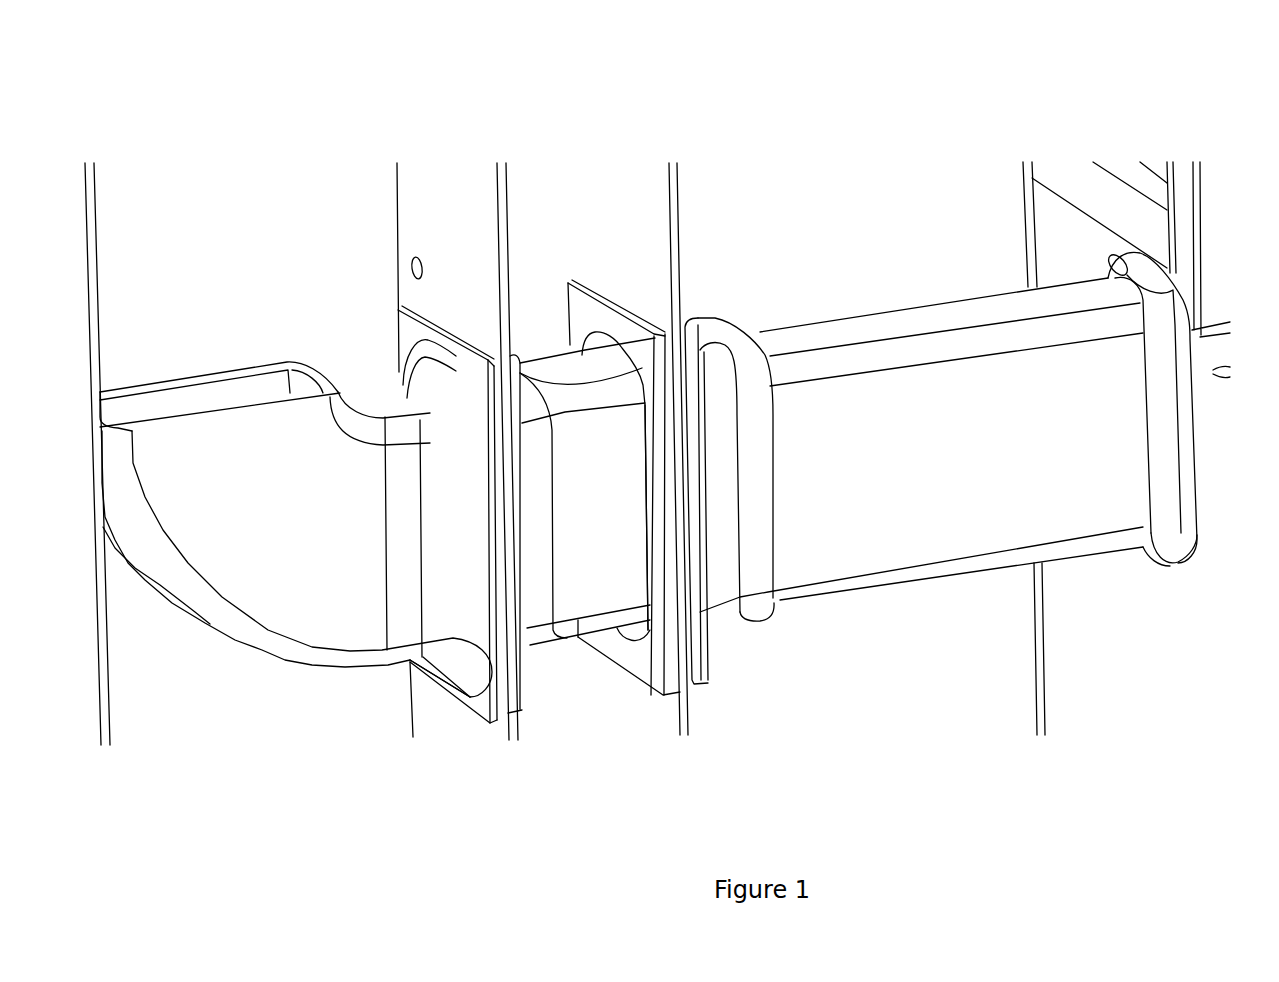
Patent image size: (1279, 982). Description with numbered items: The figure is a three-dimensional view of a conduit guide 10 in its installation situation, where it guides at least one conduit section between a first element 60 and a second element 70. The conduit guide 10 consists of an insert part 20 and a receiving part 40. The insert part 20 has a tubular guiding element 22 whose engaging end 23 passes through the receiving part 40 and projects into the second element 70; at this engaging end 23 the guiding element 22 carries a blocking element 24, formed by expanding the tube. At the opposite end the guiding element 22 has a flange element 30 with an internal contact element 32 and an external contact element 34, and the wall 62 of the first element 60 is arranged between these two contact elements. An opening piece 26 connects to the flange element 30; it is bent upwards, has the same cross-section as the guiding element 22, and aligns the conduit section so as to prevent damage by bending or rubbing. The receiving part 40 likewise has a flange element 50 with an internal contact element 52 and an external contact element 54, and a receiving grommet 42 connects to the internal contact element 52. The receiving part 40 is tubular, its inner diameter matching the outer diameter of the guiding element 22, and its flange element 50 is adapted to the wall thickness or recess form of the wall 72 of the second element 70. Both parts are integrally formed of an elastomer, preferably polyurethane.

The conduit guide 10 is at (748, 141).
The insert part 20 is at (296, 578).
The guiding element 22 is at (837, 404).
The engaging end 23 is at (1127, 587).
The blocking element 24 is at (1173, 543).
The opening piece 26 is at (237, 577).
The flange element 30 is at (486, 736).
The internal contact element 32 is at (480, 700).
The external contact element 34 is at (523, 694).
The receiving part 40 is at (882, 552).
The receiving grommet 42 is at (741, 367).
The flange element 50 is at (667, 708).
The internal contact element 52 is at (703, 670).
The external contact element 54 is at (645, 660).
The first element 60 is at (290, 215).
The wall 62 is at (503, 163).
The second element 70 is at (940, 200).
The wall 72 is at (677, 163).